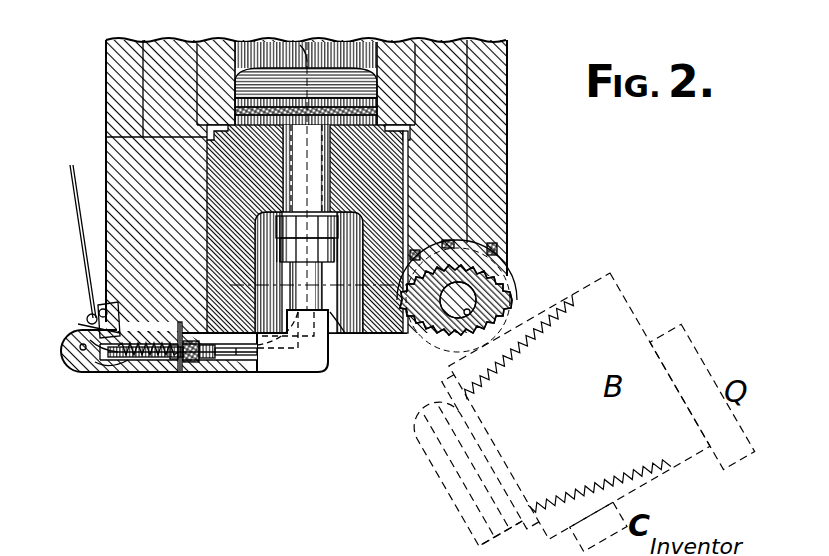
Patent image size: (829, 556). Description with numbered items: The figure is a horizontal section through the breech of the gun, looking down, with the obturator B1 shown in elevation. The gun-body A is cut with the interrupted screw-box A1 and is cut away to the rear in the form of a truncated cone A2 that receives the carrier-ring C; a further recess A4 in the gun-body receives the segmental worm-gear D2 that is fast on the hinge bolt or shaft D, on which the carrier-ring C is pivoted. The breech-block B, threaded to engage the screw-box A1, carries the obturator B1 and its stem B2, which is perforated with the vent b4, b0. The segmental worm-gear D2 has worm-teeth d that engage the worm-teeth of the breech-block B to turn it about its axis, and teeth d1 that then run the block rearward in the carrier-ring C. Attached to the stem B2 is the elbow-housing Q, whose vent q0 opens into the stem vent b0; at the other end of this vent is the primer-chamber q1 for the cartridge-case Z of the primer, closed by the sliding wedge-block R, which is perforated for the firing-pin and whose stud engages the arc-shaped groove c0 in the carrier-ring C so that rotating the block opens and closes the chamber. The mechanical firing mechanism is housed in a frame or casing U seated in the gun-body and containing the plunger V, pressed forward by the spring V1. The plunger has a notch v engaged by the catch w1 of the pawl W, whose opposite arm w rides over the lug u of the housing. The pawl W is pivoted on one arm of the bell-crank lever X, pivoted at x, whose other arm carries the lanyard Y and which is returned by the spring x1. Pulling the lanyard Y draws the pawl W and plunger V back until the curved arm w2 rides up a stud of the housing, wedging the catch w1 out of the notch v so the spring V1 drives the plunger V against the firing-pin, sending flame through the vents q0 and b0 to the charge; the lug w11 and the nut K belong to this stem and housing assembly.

The gun-body A is at (108, 66).
The interrupted screw-box A1 is at (407, 168).
The truncated cone chamber A2 is at (112, 247).
The recess for segmental worm A4 is at (507, 236).
The breech-block B is at (237, 148).
The obturator B1 is at (330, 75).
The stem B2 is at (318, 203).
The vent b4 is at (300, 45).
The vent b0 is at (342, 335).
The stem nut and cup K is at (340, 333).
The elbow-housing Q is at (300, 372).
The pawl W is at (90, 372).
The plunger V is at (112, 372).
The spring V1 is at (168, 372).
The frame or casing U is at (130, 372).
The lug u is at (140, 372).
The opposite arm of pawl w is at (150, 372).
The catch w1 is at (80, 348).
The curved arm w2 is at (90, 331).
The housing lug w11 is at (96, 366).
The notch v is at (86, 356).
The arc-shaped groove c0 is at (185, 372).
The sliding wedge-block R is at (192, 372).
The cartridge-case of primer Z is at (205, 372).
The primer-chamber q1 is at (222, 372).
The vent q0 is at (250, 372).
The lanyard Y is at (72, 182).
The bell-crank lever X is at (96, 312).
The pivot x is at (102, 308).
The spring x1 is at (88, 302).
The carrier-ring C is at (106, 262).
The hinge bolt or shaft D is at (463, 290).
The segmental worm-gear D2 is at (475, 298).
The worm-teeth d is at (507, 206).
The teeth d1 is at (470, 313).